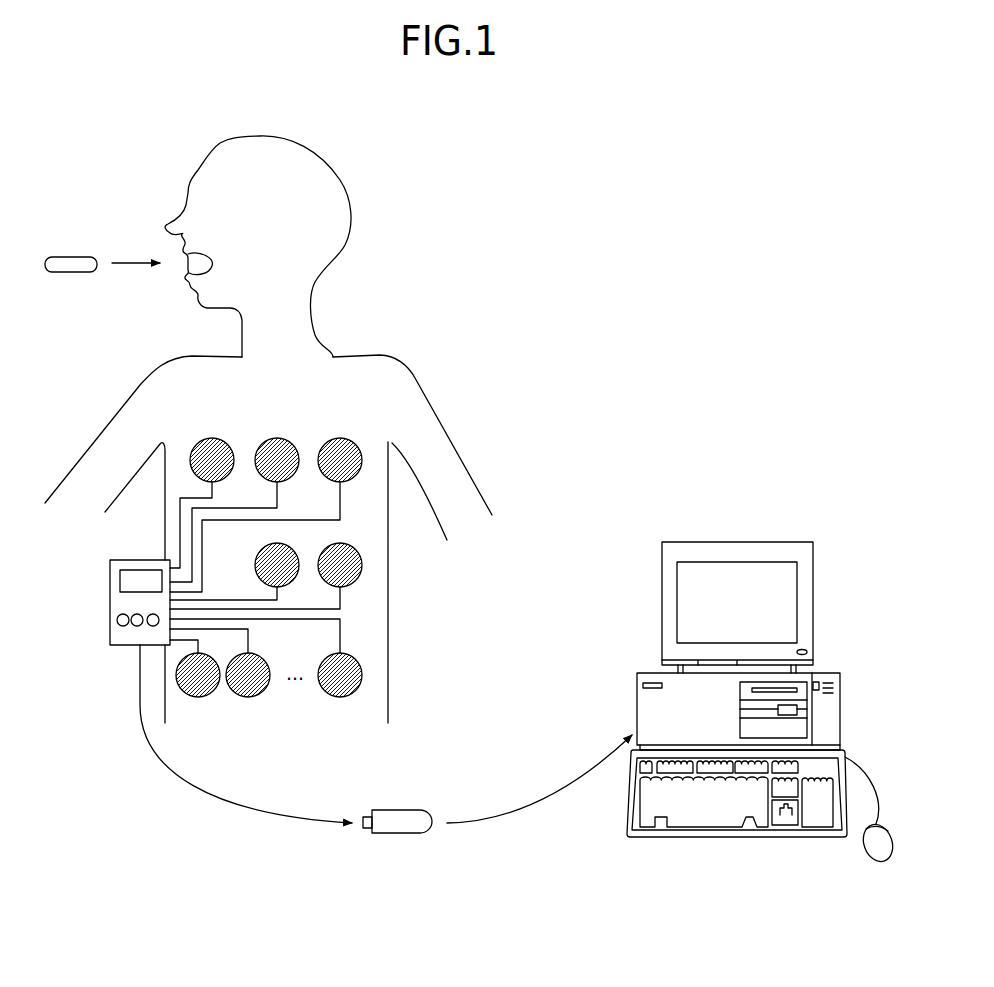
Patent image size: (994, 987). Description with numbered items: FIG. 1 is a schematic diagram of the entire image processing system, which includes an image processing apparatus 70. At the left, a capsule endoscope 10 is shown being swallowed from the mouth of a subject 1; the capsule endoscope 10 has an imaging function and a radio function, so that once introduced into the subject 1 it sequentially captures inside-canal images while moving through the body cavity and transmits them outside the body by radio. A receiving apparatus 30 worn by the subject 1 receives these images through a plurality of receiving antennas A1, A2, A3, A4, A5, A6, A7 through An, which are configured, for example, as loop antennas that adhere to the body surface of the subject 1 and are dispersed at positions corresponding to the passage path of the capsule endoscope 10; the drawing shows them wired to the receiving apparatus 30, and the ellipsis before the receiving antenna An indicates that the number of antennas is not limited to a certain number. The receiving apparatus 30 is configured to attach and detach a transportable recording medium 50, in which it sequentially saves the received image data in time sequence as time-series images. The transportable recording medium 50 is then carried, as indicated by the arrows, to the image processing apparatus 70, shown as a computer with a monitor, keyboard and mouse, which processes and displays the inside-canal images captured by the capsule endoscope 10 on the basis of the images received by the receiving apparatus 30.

The subject 1 is at (307, 141).
The capsule endoscope 10 is at (78, 257).
The receiving apparatus 30 is at (110, 582).
The transportable recording medium 50 is at (421, 810).
The image processing apparatus 70 is at (698, 522).
The receiving antenna A1 is at (212, 437).
The receiving antenna A2 is at (277, 437).
The receiving antenna A3 is at (340, 437).
The receiving antenna A4 is at (255, 565).
The receiving antenna A5 is at (349, 543).
The receiving antenna A6 is at (198, 697).
The receiving antenna A7 is at (248, 697).
The receiving antenna An is at (340, 697).